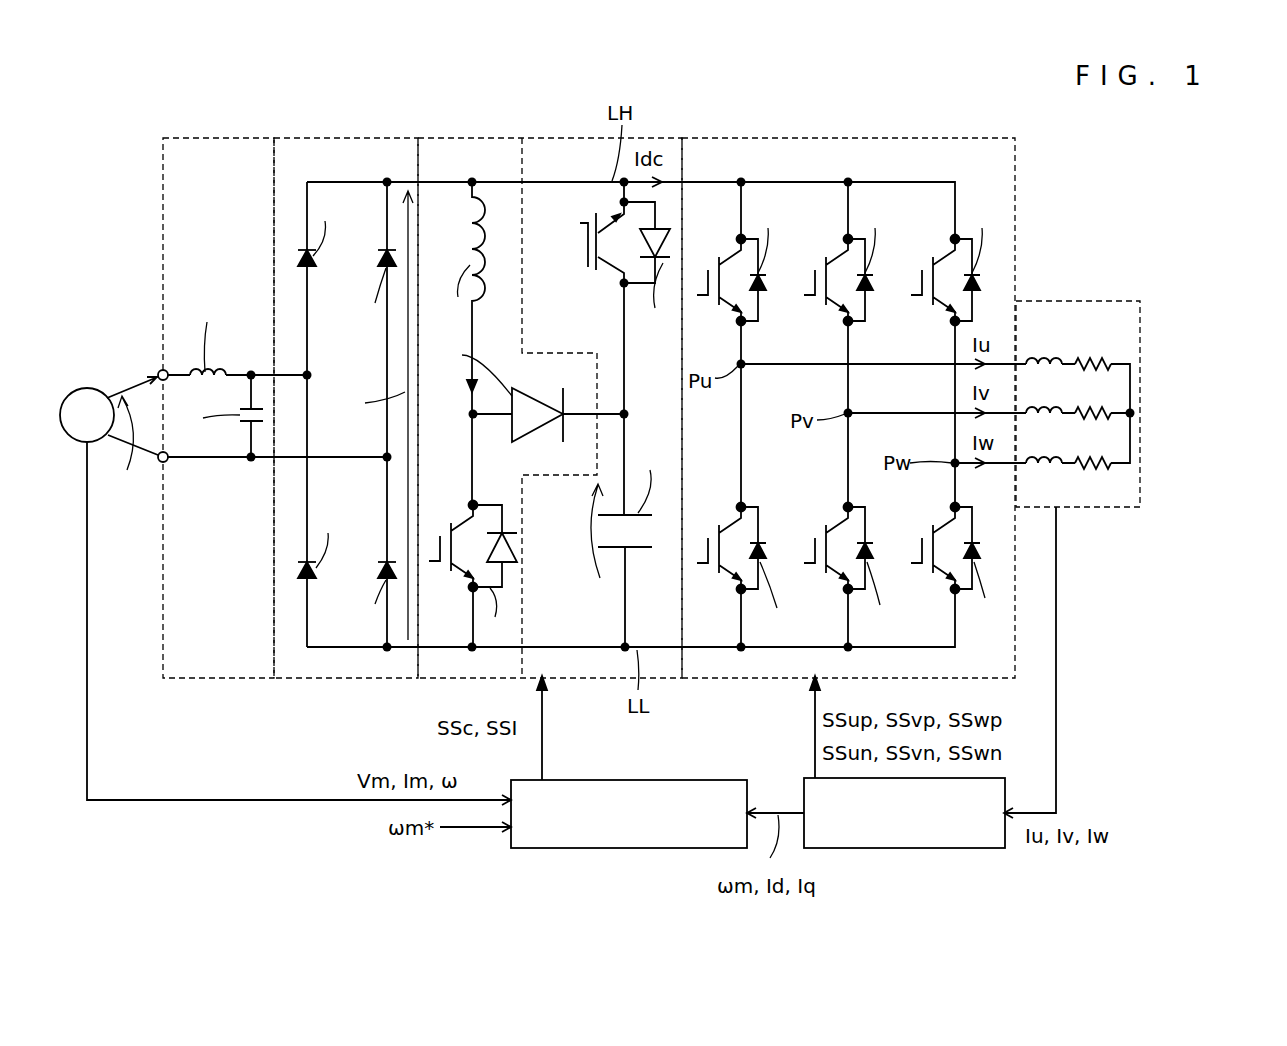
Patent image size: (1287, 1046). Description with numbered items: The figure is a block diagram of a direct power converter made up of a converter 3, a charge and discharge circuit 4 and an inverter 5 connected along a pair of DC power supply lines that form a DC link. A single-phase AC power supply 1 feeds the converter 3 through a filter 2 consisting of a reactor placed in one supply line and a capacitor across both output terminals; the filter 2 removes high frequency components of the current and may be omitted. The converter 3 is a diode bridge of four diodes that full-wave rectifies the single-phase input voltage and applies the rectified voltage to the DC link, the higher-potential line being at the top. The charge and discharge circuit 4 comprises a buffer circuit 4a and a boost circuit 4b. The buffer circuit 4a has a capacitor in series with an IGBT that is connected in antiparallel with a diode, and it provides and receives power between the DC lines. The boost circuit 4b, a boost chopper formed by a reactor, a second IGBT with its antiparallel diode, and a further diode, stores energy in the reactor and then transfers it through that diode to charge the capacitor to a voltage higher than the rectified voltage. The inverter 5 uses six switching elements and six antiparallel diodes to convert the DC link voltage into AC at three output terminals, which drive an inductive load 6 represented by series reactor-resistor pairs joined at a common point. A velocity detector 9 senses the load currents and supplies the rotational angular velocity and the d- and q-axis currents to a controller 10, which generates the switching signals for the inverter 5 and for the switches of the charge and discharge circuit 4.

The single-phase AC power supply 1 is at (88, 388).
The filter 2 is at (212, 138).
The converter 3 is at (383, 138).
The charge and discharge circuit 4 is at (600, 92).
The buffer circuit 4a is at (577, 138).
The boost circuit 4b is at (481, 138).
The inverter 5 is at (830, 138).
The inductive load 6 is at (1103, 301).
The velocity detector 9 is at (930, 850).
The controller 10 is at (651, 850).